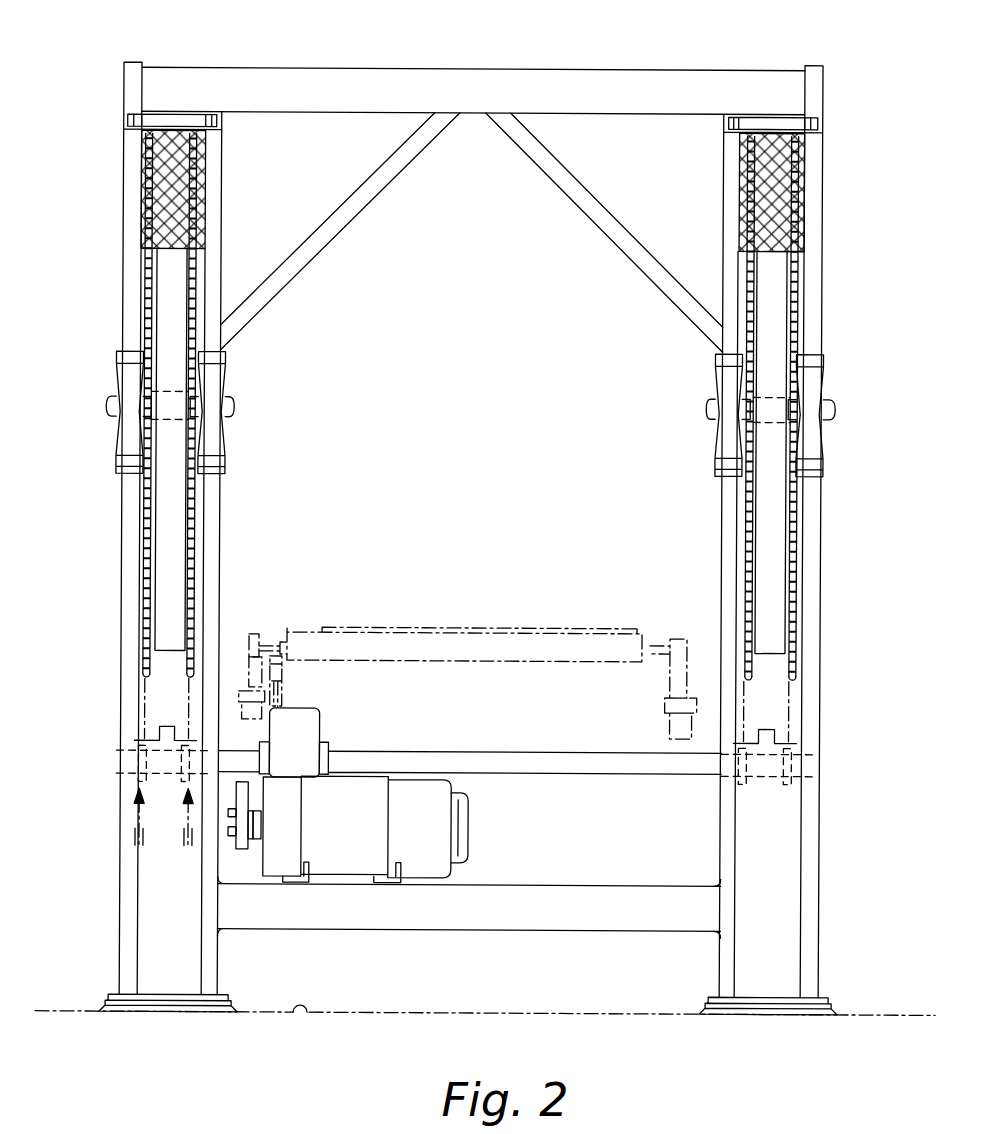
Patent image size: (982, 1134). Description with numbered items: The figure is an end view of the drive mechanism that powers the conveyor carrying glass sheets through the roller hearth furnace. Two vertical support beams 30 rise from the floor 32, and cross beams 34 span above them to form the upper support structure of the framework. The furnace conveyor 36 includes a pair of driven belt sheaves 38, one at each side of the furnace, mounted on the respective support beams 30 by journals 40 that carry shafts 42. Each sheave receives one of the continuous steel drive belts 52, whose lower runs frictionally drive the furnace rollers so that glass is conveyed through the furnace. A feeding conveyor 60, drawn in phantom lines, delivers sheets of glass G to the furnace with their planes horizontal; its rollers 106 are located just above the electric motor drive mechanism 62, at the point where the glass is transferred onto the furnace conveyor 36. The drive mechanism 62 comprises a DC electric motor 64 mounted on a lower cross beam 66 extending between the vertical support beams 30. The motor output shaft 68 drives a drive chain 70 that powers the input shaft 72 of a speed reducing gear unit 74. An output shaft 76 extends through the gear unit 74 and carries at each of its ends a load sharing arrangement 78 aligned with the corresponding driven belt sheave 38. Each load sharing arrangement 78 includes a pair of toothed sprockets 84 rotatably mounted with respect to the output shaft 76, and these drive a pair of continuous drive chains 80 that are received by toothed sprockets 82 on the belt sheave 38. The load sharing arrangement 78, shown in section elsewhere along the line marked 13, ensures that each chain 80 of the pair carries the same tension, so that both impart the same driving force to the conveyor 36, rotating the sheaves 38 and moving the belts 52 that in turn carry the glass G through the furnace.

The vertical support beams 30 is at (216, 177).
The floor 32 is at (297, 1013).
The cross beams 34 is at (382, 87).
The conveyor 36 is at (142, 306).
The driven belt sheaves 38 is at (148, 264).
The journals 40 is at (127, 373).
The shafts 42 is at (236, 406).
The continuous steel drive belts 52 is at (172, 501).
The feeding conveyor 60 is at (299, 633).
The electric motor drive mechanism 62 is at (363, 751).
The DC electric motor 64 is at (440, 847).
The lower cross beam 66 is at (571, 906).
The output shaft 68 is at (253, 833).
The drive chain 70 is at (248, 788).
The input shaft 72 is at (232, 810).
The speed reducing gear unit 74 is at (300, 720).
The output shaft 76 is at (481, 750).
The load sharing arrangements 78 is at (153, 762).
The continuous drive chains 80 is at (190, 703).
The toothed sprockets 82 is at (148, 565).
The toothed sprockets 84 is at (170, 750).
The rollers 106 is at (632, 630).
The sheets of glass G is at (508, 627).
The section line 13- 13 is at (136, 837).